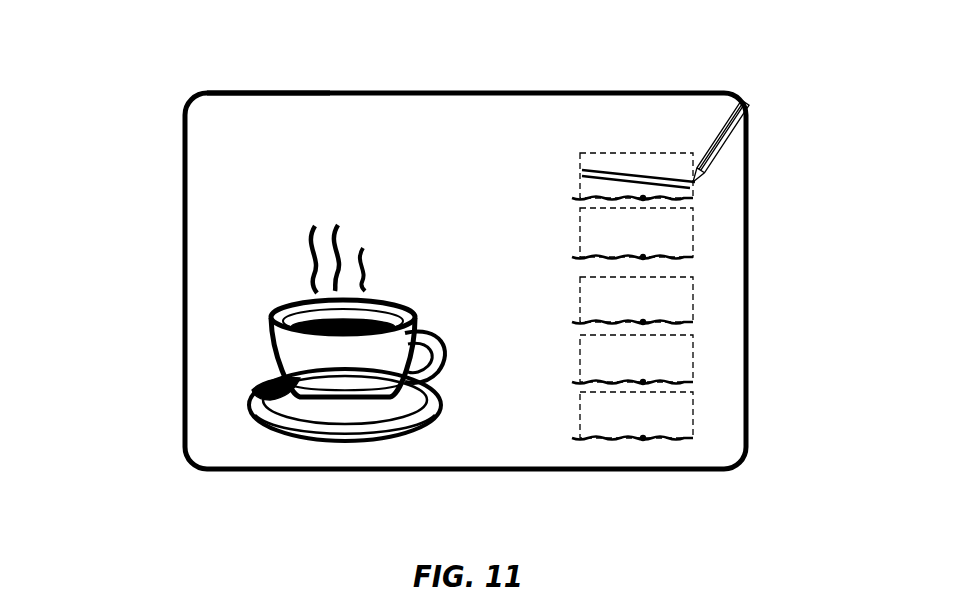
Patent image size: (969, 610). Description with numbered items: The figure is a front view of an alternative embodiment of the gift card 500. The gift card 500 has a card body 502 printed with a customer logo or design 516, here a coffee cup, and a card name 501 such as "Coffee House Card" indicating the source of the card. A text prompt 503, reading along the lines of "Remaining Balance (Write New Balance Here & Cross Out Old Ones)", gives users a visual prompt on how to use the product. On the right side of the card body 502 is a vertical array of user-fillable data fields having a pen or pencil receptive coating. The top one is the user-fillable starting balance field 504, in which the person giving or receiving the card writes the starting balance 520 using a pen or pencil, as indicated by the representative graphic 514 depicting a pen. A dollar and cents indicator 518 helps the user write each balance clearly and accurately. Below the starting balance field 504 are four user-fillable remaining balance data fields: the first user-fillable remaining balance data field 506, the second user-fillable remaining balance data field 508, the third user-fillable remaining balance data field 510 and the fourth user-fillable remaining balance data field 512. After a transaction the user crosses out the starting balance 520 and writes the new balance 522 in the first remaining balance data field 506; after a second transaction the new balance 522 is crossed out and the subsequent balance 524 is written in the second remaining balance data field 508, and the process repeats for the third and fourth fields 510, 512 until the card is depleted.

The gift card 500 is at (168, 160).
The card name 501 is at (400, 125).
The card body 502 is at (235, 118).
The text prompt 503 is at (657, 113).
The user-fillable starting balance field 504 is at (693, 178).
The first user-fillable remaining balance data field 506 is at (693, 245).
The second user-fillable remaining balance data field 508 is at (693, 310).
The third user-fillable remaining balance data field 510 is at (693, 370).
The fourth user-fillable remaining balance data field 512 is at (693, 432).
The representative graphic 514 is at (745, 105).
The customer logo or design 516 is at (298, 437).
The dollar and cents indicator 518 is at (575, 440).
The starting balance 520 is at (577, 197).
The new balance 522 is at (577, 250).
The subsequent balance 524 is at (572, 320).